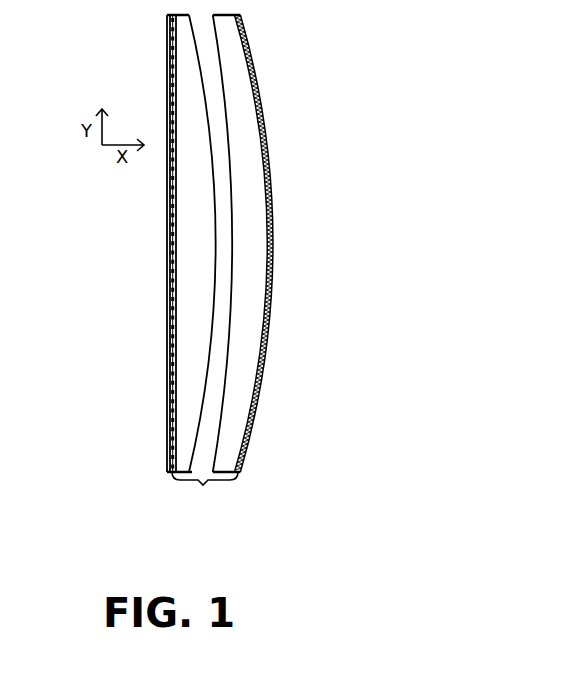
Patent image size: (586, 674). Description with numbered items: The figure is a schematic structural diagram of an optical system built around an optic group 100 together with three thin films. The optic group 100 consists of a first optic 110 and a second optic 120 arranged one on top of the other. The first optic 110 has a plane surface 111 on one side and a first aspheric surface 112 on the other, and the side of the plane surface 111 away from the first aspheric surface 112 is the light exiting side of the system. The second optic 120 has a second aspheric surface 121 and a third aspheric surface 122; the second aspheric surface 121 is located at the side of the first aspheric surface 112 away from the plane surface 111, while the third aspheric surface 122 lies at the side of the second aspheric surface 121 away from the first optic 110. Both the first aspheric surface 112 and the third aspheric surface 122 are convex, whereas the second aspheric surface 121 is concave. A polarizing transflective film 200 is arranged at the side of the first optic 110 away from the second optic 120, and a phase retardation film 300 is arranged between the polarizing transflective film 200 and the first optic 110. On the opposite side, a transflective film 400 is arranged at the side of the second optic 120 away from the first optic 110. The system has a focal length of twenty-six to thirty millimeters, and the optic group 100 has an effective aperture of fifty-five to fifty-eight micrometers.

The optic group 100 is at (203, 485).
The first optic 110 is at (195, 415).
The plane surface 111 is at (175, 375).
The first aspheric surface 112 is at (208, 367).
The second optic 120 is at (232, 452).
The second aspheric surface 121 is at (228, 357).
The third aspheric surface 122 is at (262, 340).
The polarizing transflective film 200 is at (173, 272).
The phase retardation film 300 is at (172, 255).
The transflective film 400 is at (265, 275).